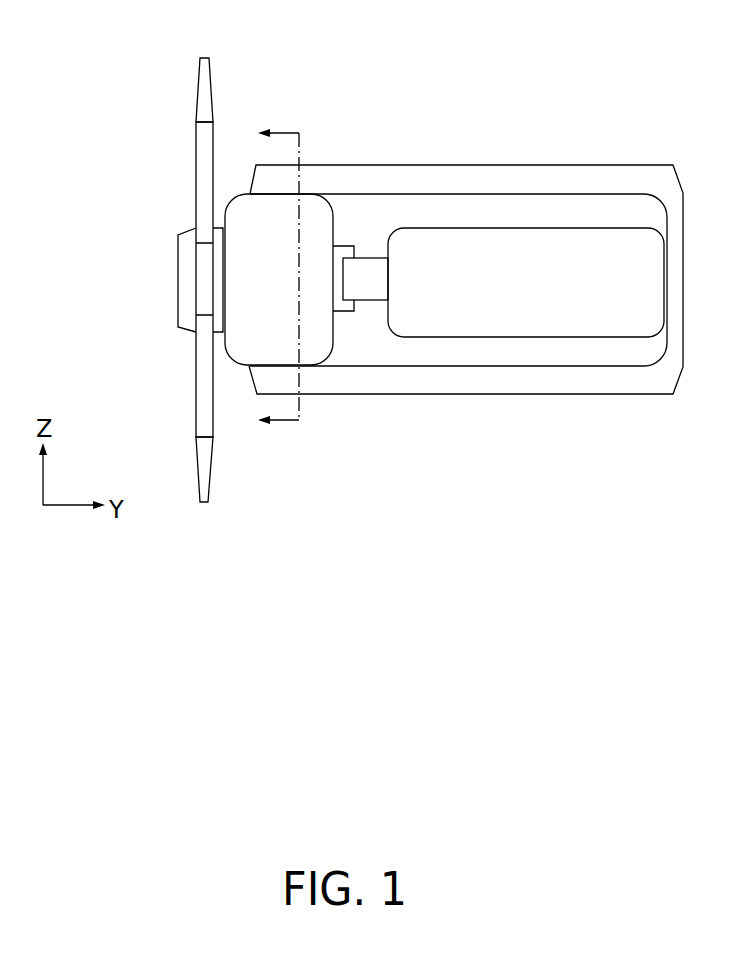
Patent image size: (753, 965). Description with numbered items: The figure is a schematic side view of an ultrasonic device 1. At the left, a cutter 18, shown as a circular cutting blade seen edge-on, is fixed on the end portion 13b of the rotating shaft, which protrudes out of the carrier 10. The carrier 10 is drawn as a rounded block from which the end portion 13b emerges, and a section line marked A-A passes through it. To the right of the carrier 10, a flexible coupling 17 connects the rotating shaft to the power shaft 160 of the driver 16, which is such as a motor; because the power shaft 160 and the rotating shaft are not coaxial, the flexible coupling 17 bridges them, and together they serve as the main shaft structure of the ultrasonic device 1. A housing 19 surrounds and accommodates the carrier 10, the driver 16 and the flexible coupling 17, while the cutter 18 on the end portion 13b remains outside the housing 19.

The ultrasonic device 1 is at (138, 62).
The carrier 10 is at (315, 205).
The end portion of rotating shaft 13b is at (202, 288).
The driver 16 is at (518, 235).
The flexible coupling 17 is at (343, 252).
The power shaft 160 is at (368, 265).
The cutter 18 is at (200, 162).
The housing 19 is at (583, 178).